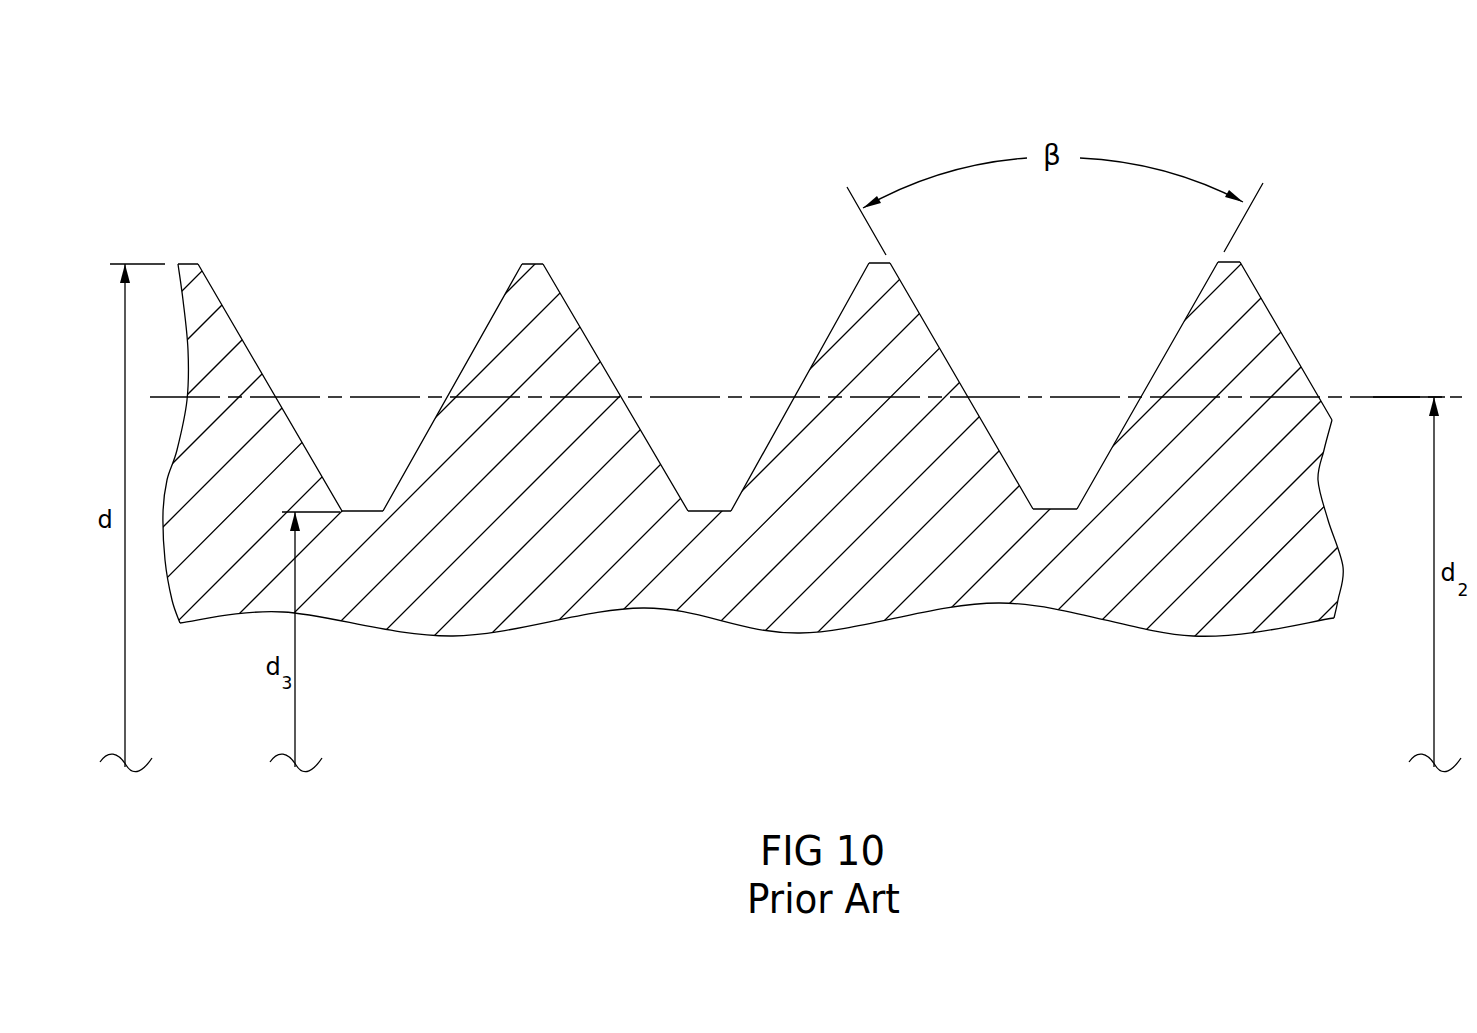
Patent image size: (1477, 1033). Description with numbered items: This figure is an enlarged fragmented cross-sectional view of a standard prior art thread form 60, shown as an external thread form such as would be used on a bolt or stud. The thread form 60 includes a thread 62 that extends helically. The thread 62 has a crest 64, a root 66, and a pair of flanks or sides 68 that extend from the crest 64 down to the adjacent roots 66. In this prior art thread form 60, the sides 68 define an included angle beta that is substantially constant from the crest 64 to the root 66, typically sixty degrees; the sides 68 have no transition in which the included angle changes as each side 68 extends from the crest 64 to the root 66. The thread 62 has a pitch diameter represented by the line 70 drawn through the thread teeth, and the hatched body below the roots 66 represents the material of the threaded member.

The threaded portion (prior art thread form) 60 is at (250, 115).
The thread 62 is at (528, 287).
The crest 64 is at (530, 263).
The root 66 is at (360, 508).
The flank 68 is at (478, 343).
The pitch line 70 is at (1360, 397).